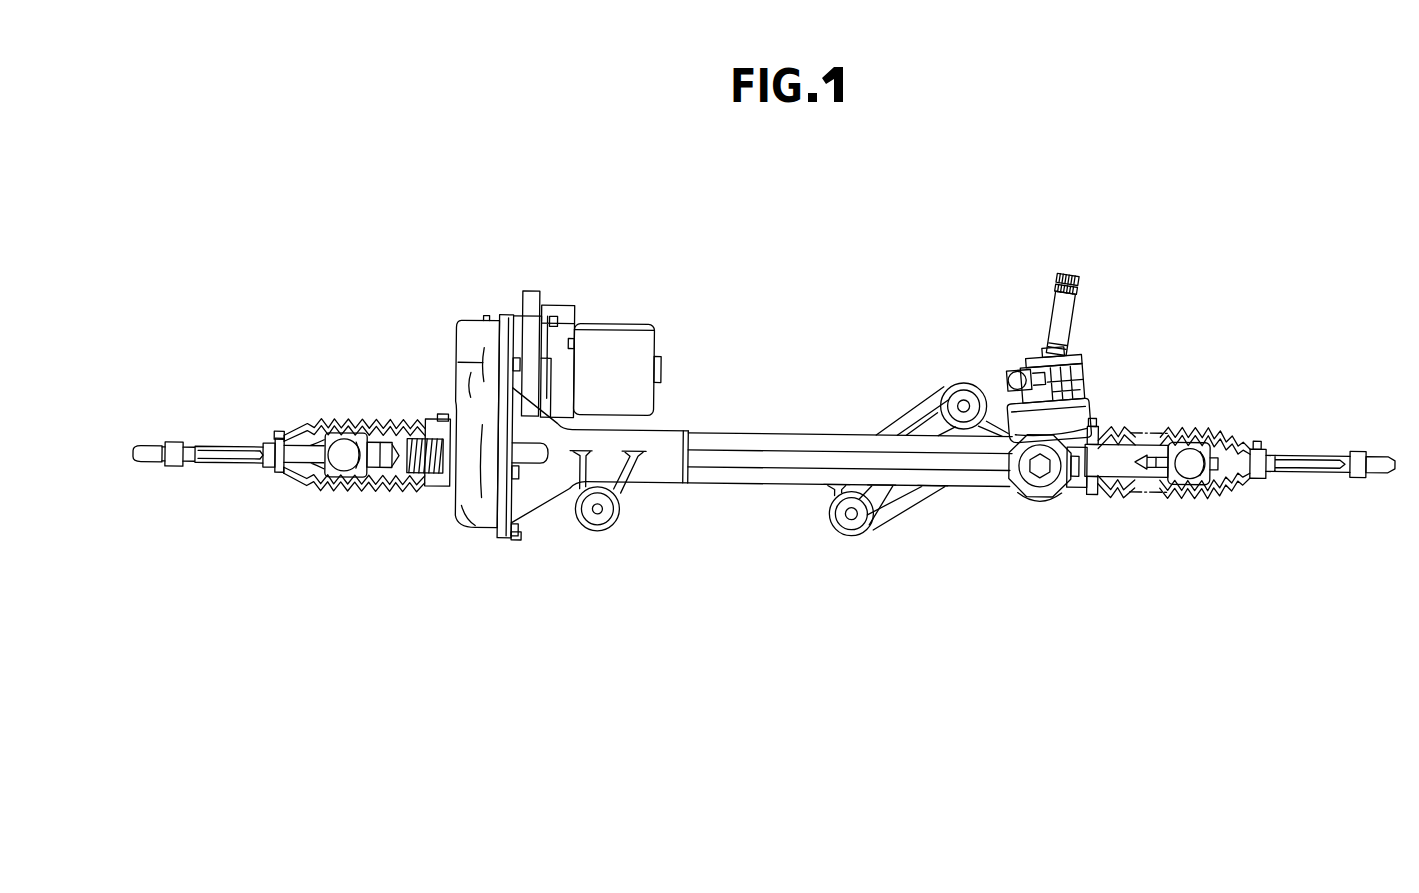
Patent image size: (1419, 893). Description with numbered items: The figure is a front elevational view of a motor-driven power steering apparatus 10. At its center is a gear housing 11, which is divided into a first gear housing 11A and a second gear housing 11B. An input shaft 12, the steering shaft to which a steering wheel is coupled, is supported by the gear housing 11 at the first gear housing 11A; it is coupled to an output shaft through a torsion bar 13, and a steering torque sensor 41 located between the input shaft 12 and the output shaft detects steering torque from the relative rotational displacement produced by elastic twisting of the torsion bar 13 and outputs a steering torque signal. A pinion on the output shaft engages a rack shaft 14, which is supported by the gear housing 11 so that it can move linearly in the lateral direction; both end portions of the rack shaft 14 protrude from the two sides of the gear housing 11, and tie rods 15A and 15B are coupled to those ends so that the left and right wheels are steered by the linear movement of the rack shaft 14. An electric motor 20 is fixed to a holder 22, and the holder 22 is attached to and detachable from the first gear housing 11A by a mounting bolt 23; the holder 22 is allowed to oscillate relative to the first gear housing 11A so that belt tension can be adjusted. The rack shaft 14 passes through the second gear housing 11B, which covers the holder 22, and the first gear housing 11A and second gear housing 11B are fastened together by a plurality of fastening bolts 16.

The motor-driven power steering apparatus 10 is at (710, 286).
The gear housing 11 is at (836, 432).
The first gear housing 11A is at (670, 478).
The second gear housing 11B is at (460, 515).
The input shaft 12 is at (1078, 323).
The torsion bar 13 is at (1068, 270).
The rack shaft 14 is at (412, 418).
The tie rod 15A is at (1380, 474).
The tie rod 15B is at (156, 466).
The fastening bolt 16 is at (520, 542).
The electric motor 20 is at (617, 340).
The holder 22 is at (530, 293).
The mounting bolt 23 is at (553, 323).
The steering torque sensor 41 is at (1090, 380).